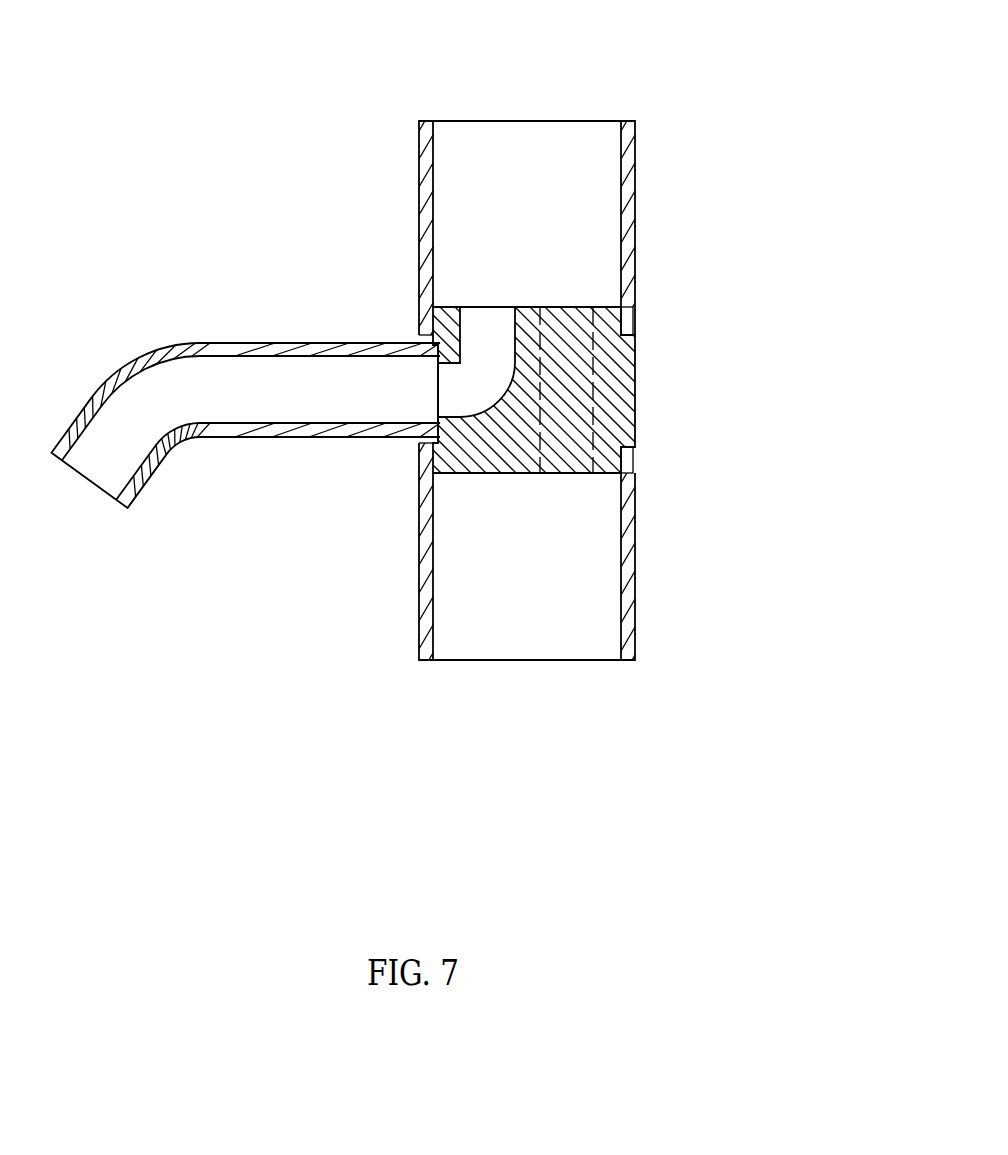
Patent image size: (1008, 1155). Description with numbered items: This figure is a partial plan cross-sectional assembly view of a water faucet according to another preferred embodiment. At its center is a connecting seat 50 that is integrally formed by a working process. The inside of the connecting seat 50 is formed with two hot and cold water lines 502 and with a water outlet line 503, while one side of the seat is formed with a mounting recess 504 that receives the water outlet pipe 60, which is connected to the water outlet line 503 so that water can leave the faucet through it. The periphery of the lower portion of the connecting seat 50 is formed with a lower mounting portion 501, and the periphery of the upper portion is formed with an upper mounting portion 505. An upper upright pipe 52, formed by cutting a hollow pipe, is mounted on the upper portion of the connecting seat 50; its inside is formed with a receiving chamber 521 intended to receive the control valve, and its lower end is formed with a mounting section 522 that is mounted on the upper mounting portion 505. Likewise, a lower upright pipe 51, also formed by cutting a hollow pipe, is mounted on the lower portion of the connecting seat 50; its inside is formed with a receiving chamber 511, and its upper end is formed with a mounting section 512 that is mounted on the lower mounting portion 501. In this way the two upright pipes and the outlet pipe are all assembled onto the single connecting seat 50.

The connecting seat 50 is at (637, 385).
The lower mounting portion 501 is at (605, 474).
The water lines 502 is at (573, 372).
The water outlet line 503 is at (470, 338).
The mounting recess 504 is at (460, 468).
The upper mounting portion 505 is at (630, 323).
The lower upright pipe 51 is at (638, 620).
The receiving chamber 511 is at (508, 647).
The mounting section 512 is at (623, 462).
The upper upright pipe 52 is at (418, 178).
The receiving chamber 521 is at (540, 152).
The mounting section 522 is at (606, 290).
The water outlet pipe 60 is at (173, 448).